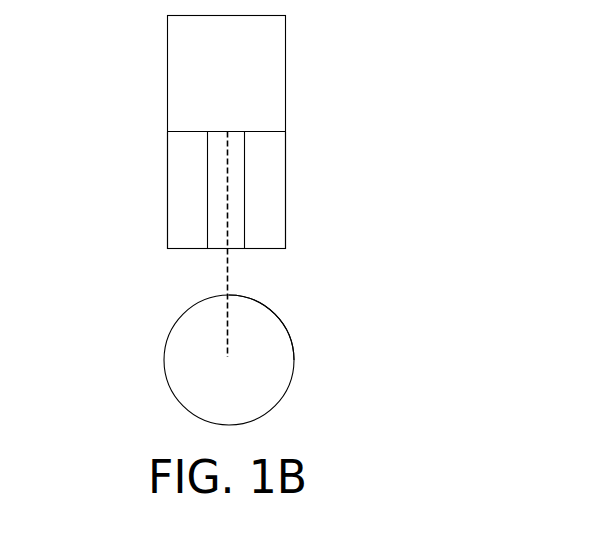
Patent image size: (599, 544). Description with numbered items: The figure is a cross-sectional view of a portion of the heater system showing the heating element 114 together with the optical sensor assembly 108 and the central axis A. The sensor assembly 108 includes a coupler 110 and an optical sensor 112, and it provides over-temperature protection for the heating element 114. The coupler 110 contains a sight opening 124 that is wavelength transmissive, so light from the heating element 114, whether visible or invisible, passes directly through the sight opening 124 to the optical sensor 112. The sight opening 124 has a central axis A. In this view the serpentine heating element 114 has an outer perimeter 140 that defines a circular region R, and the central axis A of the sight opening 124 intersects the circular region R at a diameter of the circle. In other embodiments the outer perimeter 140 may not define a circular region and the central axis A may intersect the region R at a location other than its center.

The sensor assembly 108 is at (318, 102).
The optical sensor 112 is at (245, 112).
The coupler 110 is at (168, 146).
The sight opening 124 is at (208, 191).
The central axis A is at (225, 232).
The heating element 114 is at (156, 340).
The outer perimeter 140 is at (283, 328).
The circular region R is at (271, 374).